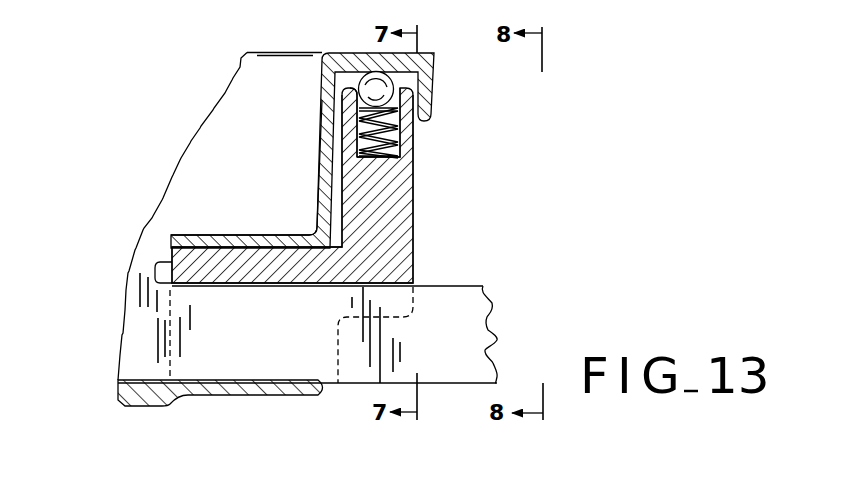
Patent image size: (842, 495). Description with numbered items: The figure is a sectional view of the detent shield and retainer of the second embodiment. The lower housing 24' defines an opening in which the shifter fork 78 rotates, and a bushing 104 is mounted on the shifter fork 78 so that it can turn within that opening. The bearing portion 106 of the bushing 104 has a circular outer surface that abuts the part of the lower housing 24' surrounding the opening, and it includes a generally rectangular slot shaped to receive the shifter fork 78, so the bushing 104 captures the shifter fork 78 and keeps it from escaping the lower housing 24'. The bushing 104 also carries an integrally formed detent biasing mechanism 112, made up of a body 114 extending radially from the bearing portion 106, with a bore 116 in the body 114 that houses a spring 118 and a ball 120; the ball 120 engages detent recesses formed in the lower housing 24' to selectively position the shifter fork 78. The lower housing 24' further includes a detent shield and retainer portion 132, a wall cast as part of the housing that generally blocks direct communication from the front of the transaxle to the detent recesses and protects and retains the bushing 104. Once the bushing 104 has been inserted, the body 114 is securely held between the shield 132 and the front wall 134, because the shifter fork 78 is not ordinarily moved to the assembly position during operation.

The lower housing 24' is at (220, 196).
The shifter fork 78 is at (464, 280).
The bushing 104 is at (463, 229).
The bearing portion 106 is at (168, 265).
The detent biasing mechanism 112 is at (426, 145).
The body 114 is at (348, 180).
The bore 116 is at (358, 114).
The spring 118 is at (400, 132).
The ball 120 is at (373, 74).
The detent shield and retainer portion 132 is at (431, 85).
The front wall 134 is at (316, 198).